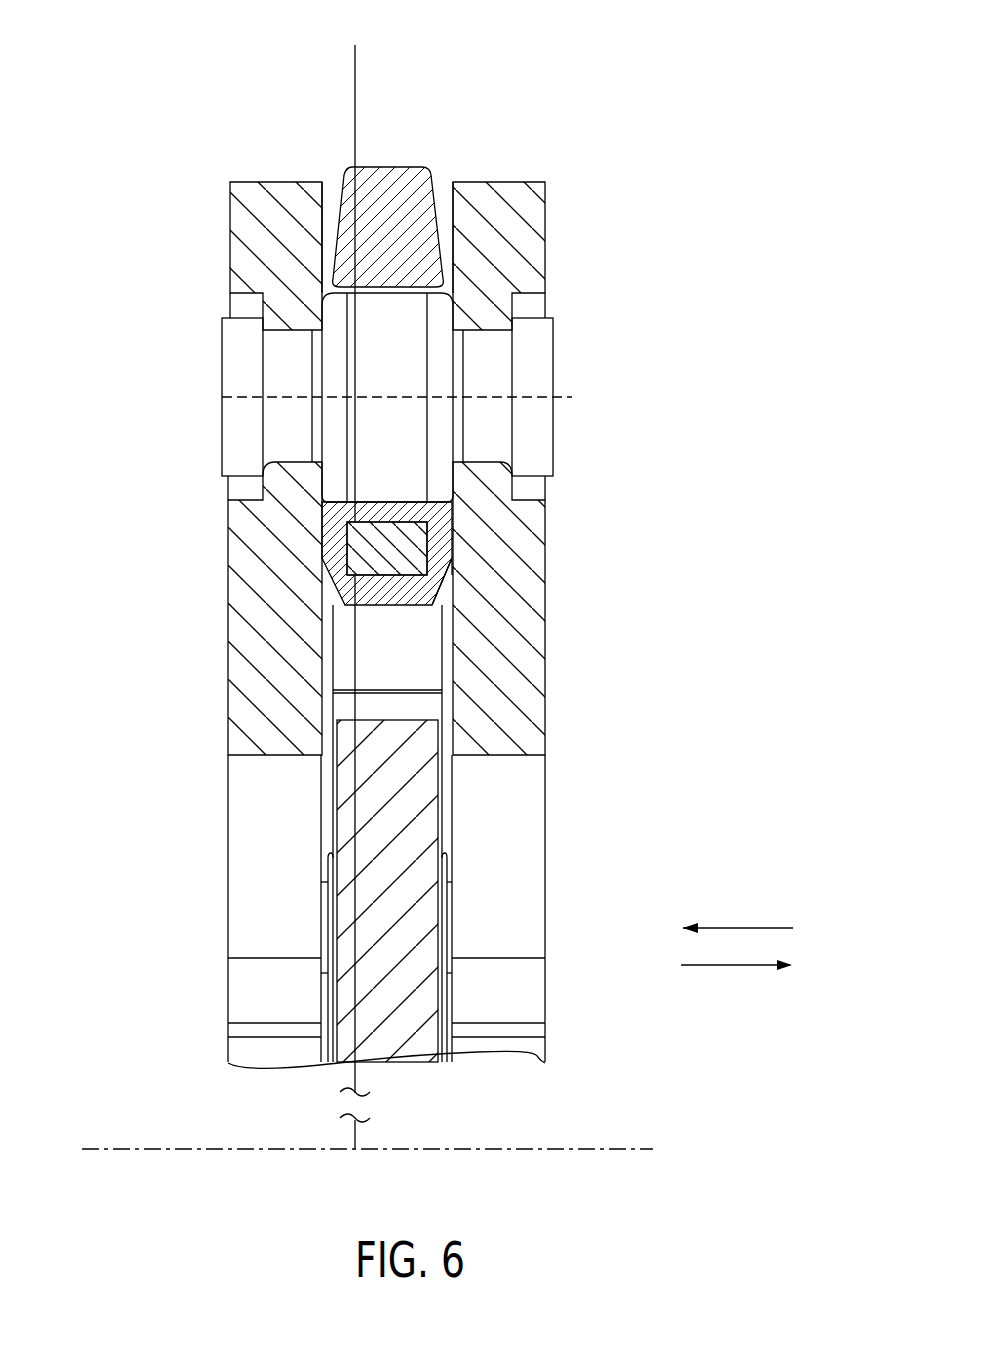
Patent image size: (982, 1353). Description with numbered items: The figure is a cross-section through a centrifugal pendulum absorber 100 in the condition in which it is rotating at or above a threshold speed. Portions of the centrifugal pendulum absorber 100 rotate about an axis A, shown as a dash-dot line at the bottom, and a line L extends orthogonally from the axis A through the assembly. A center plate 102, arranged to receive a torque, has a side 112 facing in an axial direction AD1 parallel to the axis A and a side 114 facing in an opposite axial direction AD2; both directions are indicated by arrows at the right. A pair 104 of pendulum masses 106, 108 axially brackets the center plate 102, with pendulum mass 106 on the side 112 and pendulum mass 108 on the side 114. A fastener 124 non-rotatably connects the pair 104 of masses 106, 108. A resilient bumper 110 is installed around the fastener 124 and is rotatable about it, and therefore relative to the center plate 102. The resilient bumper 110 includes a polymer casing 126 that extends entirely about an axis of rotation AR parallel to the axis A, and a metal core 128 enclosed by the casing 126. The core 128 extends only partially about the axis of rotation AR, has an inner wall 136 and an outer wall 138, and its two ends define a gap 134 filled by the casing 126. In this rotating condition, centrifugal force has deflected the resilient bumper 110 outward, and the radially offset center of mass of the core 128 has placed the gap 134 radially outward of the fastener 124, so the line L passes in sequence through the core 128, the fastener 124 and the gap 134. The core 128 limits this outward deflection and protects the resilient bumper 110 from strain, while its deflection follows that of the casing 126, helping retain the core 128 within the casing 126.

The centrifugal pendulum absorber 100 is at (592, 110).
The center plate 102 is at (417, 1062).
The pair of pendulum masses 104 is at (432, 118).
The pendulum mass 106 is at (548, 612).
The pendulum mass 108 is at (222, 625).
The resilient bumper 110 is at (448, 222).
The side of center plate 112 is at (444, 805).
The side of center plate 114 is at (333, 805).
The fastener 124 is at (222, 398).
The casing 126 is at (345, 606).
The core 128 is at (428, 573).
The gap 134 is at (388, 221).
The inner wall 136 is at (435, 510).
The outer wall 138 is at (440, 565).
The line L is at (357, 78).
The axis of rotation AR is at (413, 398).
The axis A is at (625, 1152).
The axial direction AD1 is at (723, 967).
The axial direction AD2 is at (738, 928).